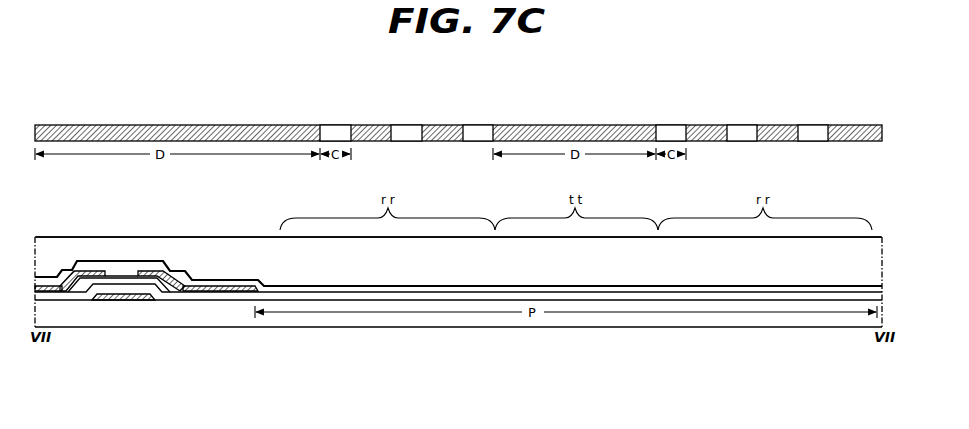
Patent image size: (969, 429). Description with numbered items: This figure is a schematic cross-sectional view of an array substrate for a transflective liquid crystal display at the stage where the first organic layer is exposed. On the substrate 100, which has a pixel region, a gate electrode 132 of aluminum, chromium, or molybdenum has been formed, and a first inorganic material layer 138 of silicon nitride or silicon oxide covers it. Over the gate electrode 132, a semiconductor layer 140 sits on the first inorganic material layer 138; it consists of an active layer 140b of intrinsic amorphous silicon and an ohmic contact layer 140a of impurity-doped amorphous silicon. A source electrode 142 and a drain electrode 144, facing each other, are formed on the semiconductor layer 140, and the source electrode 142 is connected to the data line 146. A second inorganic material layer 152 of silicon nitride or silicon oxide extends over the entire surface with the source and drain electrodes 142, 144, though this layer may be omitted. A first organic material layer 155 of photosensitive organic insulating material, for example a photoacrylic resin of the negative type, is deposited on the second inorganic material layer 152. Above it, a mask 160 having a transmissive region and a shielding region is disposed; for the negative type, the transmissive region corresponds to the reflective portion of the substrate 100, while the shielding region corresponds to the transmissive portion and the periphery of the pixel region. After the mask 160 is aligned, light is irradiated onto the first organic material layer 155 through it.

The substrate 100 is at (437, 326).
The gate electrode 132 is at (125, 300).
The first inorganic material layer 138 is at (80, 300).
The semiconductor layer 140 is at (119, 236).
The ohmic contact layer 140a is at (102, 271).
The active layer 140b is at (127, 281).
The source electrode 142 is at (82, 274).
The drain electrode 144 is at (163, 271).
The data line 146 is at (45, 285).
The second inorganic material layer 152 is at (213, 282).
The first organic material layer 155 is at (257, 238).
The mask 160 is at (857, 128).